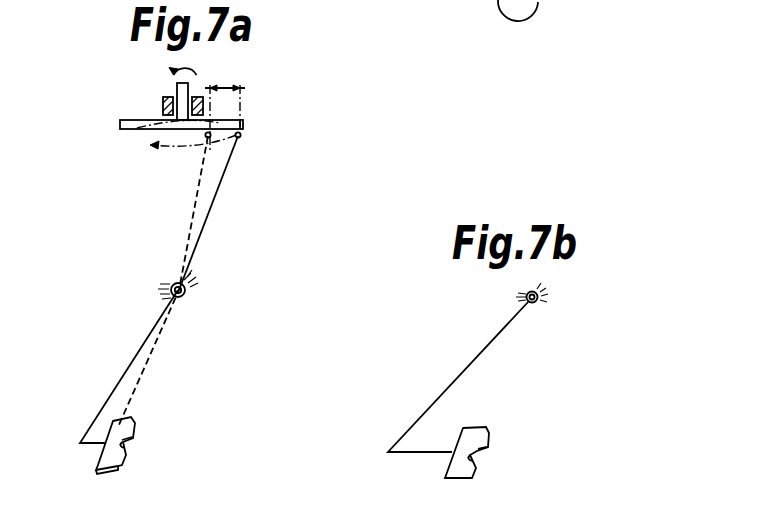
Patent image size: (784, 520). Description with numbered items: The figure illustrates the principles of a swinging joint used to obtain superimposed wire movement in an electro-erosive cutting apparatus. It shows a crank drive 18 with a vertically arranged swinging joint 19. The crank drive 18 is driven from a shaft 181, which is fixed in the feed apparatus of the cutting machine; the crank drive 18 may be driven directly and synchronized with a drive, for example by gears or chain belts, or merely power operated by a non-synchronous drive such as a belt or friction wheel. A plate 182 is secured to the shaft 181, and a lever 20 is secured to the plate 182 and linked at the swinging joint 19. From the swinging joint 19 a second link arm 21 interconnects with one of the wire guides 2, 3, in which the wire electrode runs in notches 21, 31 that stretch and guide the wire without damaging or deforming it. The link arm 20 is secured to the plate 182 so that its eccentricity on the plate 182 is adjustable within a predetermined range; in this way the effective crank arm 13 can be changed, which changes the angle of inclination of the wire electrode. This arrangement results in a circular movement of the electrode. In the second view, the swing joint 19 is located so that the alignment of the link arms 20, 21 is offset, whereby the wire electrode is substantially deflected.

In FIG. 7A, the crank drive 18 is at (300, 145).
In FIG. 7A, the shaft 181 is at (176, 88).
In FIG. 7A, the plate 182 is at (120, 123).
In FIG. 7A, the effective crank arm 13 is at (222, 85).
In FIG. 7A, the lever 20 is at (211, 213).
In FIG. 7A, the swinging joint 19 is at (185, 300).
In FIG. 7B, the swinging joint 19 is at (532, 305).
In FIG. 7A, the second link arm 21 is at (137, 352).
In FIG. 7B, the second link arm 21 is at (472, 358).
In FIG. 7A, the upper guide 2 is at (149, 429).
In FIG. 7B, the upper guide 2 is at (487, 430).
In FIG. 7A, the lower guide 3 is at (138, 425).
In FIG. 7B, the lower guide 3 is at (482, 427).
In FIG. 7A, the notch 31 is at (122, 441).
In FIG. 7B, the notch 31 is at (478, 455).